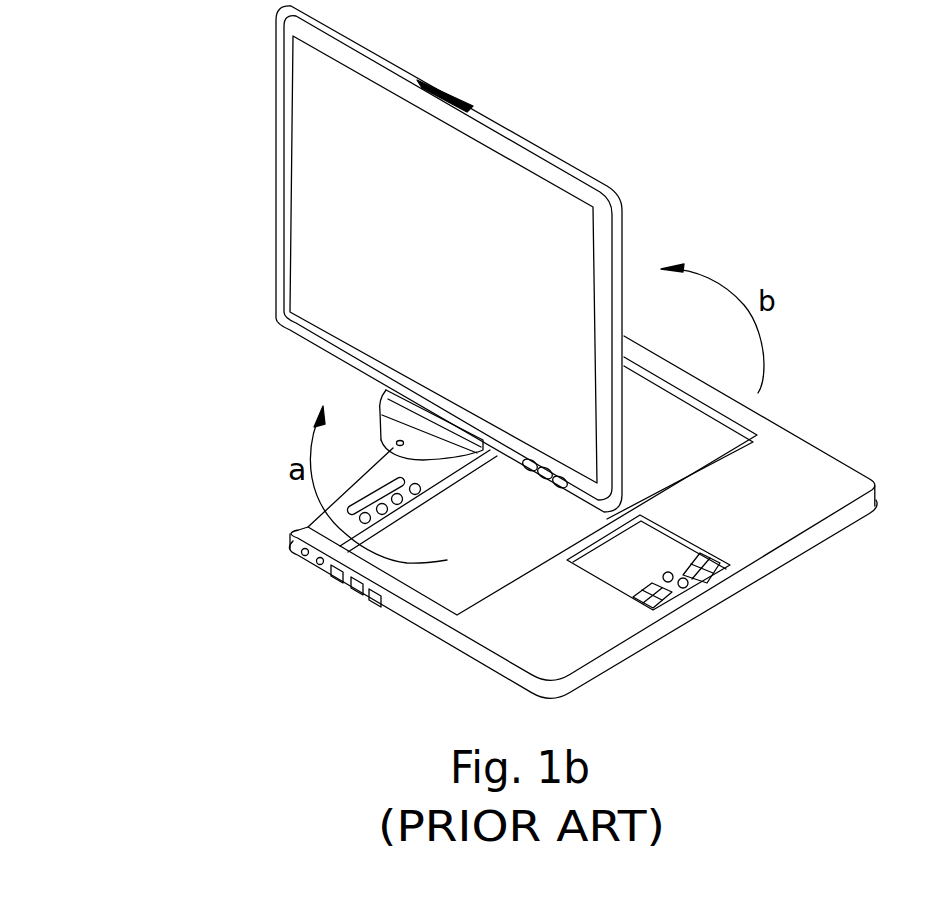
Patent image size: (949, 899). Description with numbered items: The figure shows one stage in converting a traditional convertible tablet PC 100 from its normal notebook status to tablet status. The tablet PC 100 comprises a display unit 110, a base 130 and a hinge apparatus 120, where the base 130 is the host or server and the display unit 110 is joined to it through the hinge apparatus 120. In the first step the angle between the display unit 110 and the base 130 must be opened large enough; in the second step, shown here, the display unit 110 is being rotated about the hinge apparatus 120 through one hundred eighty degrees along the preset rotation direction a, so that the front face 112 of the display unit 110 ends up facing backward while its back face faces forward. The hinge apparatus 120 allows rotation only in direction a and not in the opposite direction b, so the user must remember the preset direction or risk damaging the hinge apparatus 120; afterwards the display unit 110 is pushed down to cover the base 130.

The convertible tablet PC 100 is at (100, 89).
The display unit 110 is at (276, 206).
The front face 112 is at (465, 258).
The hinge apparatus 120 is at (383, 420).
The base 130 is at (829, 453).